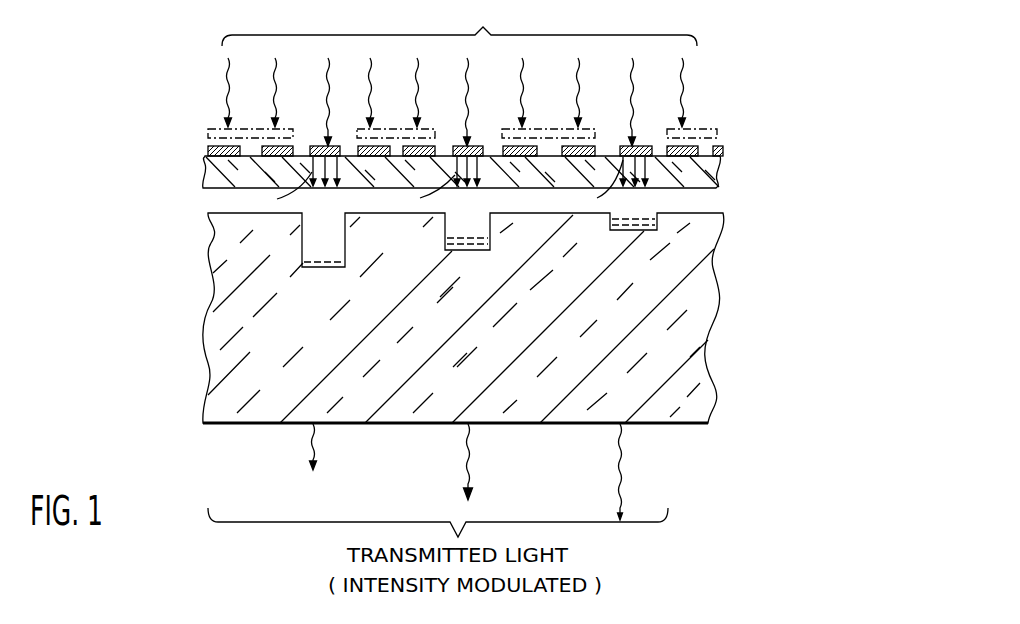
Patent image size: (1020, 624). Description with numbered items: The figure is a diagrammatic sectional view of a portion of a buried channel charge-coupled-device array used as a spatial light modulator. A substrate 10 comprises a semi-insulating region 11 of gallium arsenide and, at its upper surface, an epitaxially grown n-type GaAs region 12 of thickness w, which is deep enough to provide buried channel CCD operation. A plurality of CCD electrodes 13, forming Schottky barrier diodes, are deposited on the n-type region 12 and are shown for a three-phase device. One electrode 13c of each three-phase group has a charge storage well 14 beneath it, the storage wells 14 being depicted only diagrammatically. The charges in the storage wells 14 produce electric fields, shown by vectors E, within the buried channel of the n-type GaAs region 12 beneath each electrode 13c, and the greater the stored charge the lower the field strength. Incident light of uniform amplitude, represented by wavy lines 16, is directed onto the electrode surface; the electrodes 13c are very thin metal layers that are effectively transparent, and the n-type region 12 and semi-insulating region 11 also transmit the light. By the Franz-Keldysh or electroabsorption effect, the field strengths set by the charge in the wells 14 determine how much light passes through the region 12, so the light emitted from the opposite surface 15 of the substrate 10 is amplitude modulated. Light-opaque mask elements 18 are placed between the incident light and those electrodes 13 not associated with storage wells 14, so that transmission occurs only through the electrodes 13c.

The substrate 10 is at (192, 383).
The semi-insulating region 11 is at (222, 318).
The n-type GaAs region 12 is at (204, 190).
The CCD electrodes 13 is at (205, 147).
The electrode 13c is at (671, 107).
The charge storage wells 14 is at (610, 226).
The opposite surface 15 is at (227, 425).
The wavy lines 16 is at (459, 73).
The masks 18 is at (546, 128).